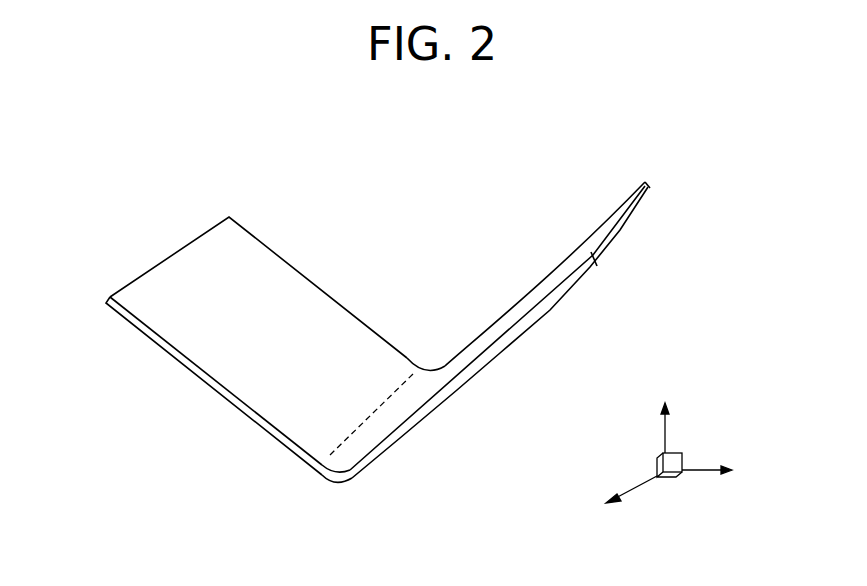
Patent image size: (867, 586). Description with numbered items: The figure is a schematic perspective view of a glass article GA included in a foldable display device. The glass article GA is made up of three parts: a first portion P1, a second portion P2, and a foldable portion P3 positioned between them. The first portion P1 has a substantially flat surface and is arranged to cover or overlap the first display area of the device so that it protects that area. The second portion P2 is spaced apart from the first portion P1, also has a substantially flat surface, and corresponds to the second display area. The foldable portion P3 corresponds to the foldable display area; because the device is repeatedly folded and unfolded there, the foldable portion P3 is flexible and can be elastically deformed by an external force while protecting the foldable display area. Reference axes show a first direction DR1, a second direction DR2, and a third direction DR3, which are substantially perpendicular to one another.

The first portion P1 is at (305, 297).
The second portion P2 is at (496, 331).
The foldable portion P3 is at (416, 386).
The glass article GA is at (478, 197).
The first direction DR1 is at (607, 496).
The second direction DR2 is at (729, 470).
The third direction DR3 is at (665, 415).